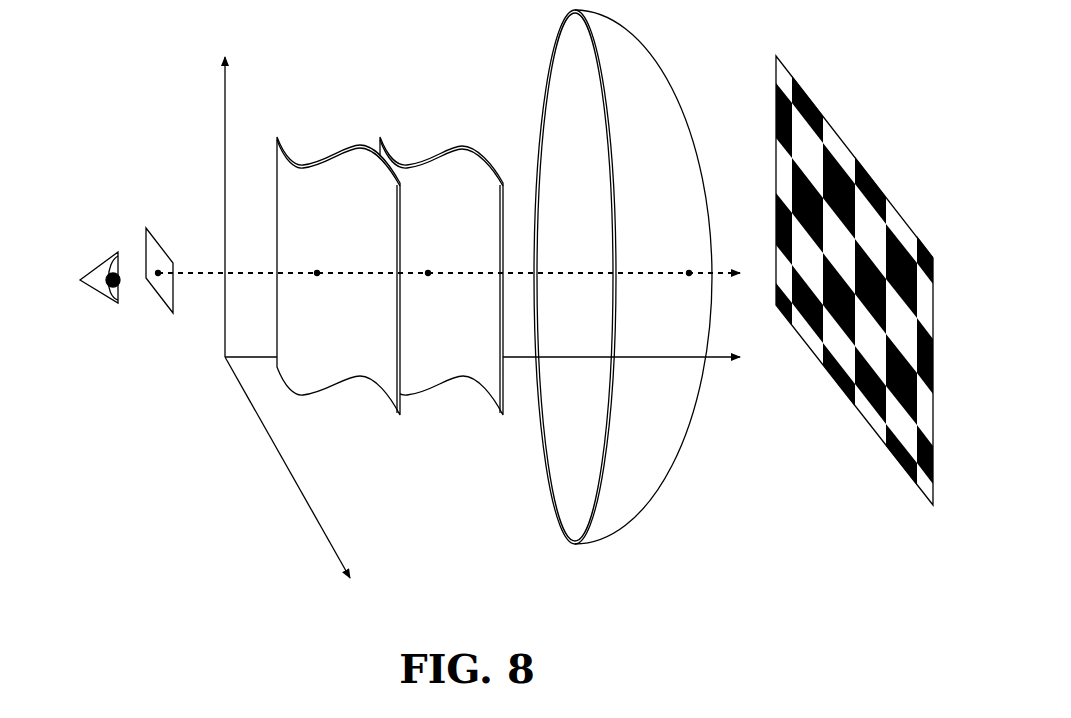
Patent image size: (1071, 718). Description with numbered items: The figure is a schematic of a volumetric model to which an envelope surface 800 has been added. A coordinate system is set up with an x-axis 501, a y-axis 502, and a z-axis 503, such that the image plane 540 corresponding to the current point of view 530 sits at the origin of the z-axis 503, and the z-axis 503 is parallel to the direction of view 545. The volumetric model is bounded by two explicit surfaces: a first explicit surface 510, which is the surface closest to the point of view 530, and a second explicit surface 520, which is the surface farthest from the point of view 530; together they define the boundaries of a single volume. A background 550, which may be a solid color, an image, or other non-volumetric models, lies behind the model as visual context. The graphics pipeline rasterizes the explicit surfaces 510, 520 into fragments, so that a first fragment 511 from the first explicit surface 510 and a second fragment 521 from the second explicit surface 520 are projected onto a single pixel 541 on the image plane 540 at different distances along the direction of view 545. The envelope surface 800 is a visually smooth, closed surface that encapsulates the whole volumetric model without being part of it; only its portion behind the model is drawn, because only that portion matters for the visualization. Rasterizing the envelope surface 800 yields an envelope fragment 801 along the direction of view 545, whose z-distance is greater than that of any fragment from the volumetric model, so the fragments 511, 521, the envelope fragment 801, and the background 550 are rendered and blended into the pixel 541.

The x-axis 501 is at (307, 494).
The y-axis 502 is at (229, 180).
The z-axis 503 is at (517, 370).
The first explicit surface 510 is at (360, 145).
The first fragment 511 is at (318, 278).
The second explicit surface 520 is at (462, 146).
The second fragment 521 is at (430, 278).
The point of view 530 is at (100, 258).
The image plane 540 is at (160, 293).
The pixel 541 is at (158, 272).
The direction of view 545 is at (593, 272).
The background 550 is at (857, 410).
The envelope surface 800 is at (637, 36).
The envelope fragment 801 is at (690, 278).